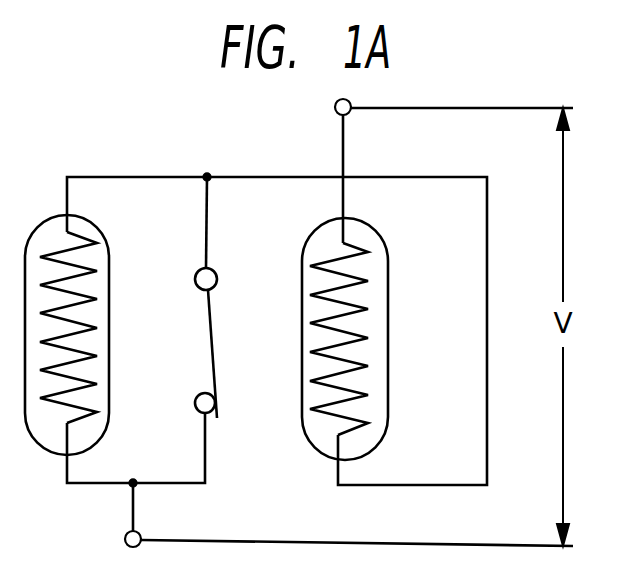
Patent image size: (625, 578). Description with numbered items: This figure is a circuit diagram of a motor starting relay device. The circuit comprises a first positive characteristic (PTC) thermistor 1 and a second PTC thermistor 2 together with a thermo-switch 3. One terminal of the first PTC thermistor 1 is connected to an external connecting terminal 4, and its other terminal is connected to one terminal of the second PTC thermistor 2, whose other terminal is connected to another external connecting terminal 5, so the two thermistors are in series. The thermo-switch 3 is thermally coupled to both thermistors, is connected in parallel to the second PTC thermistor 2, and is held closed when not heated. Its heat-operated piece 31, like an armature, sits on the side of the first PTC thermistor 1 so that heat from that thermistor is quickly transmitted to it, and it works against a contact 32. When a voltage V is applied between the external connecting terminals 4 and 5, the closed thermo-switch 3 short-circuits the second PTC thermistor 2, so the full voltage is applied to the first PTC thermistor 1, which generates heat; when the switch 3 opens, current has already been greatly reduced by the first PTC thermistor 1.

The first positive characteristic (PTC) thermistor 1 is at (386, 254).
The second positive characteristic (PTC) thermistor 2 is at (110, 257).
The thermo-switch 3 is at (205, 352).
The heat-operated piece 31 is at (215, 380).
The contact 32 is at (197, 408).
The external connecting terminal 4 is at (335, 107).
The external connecting terminal 5 is at (125, 540).